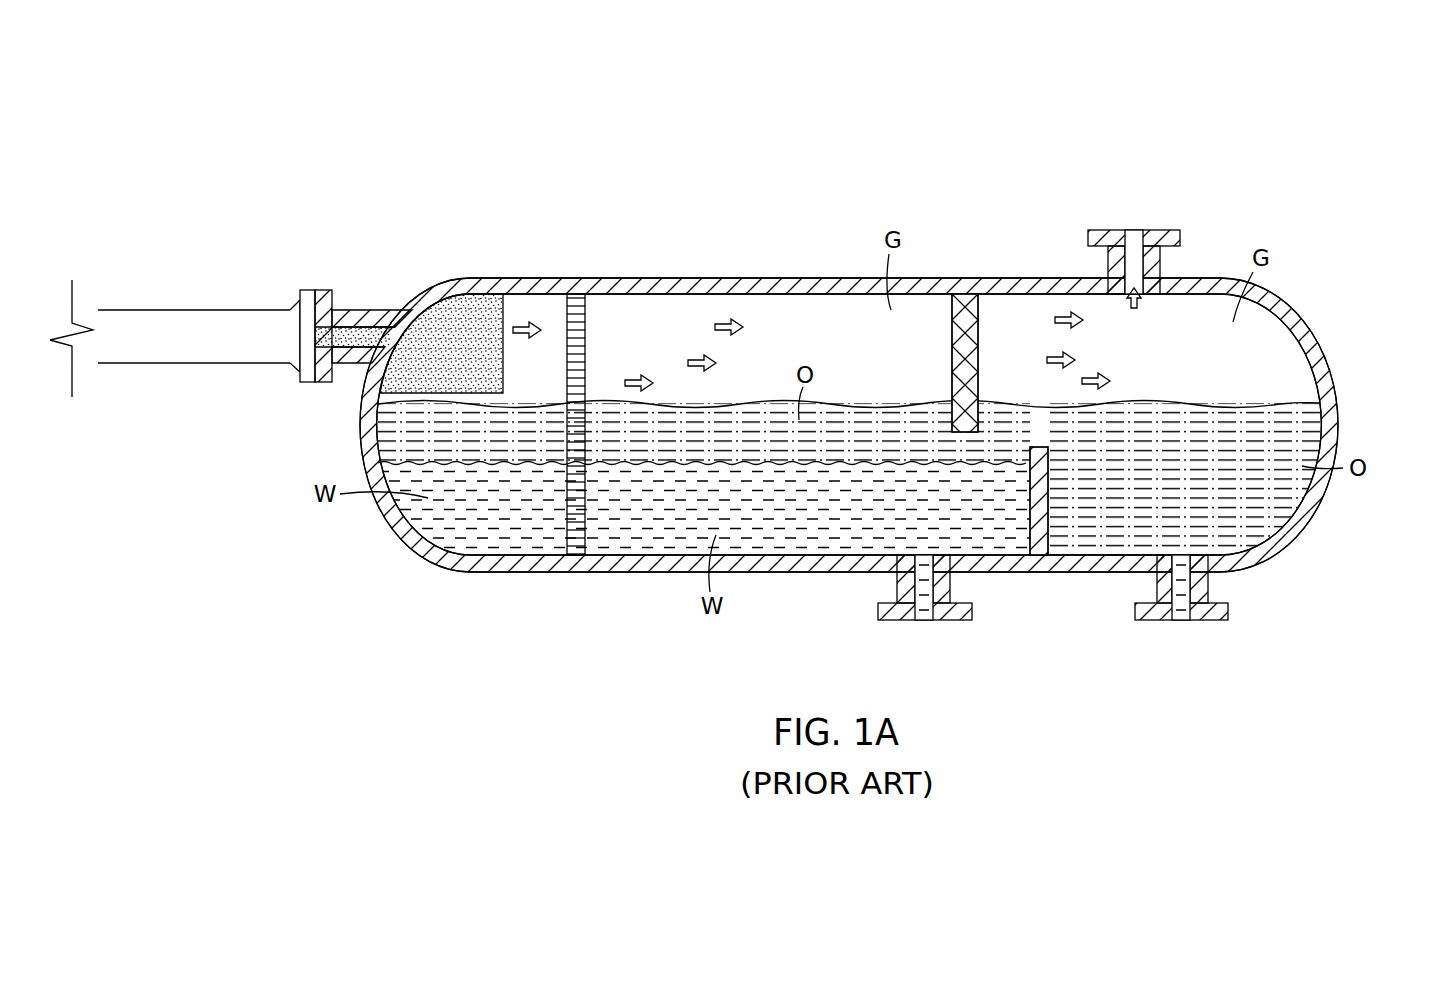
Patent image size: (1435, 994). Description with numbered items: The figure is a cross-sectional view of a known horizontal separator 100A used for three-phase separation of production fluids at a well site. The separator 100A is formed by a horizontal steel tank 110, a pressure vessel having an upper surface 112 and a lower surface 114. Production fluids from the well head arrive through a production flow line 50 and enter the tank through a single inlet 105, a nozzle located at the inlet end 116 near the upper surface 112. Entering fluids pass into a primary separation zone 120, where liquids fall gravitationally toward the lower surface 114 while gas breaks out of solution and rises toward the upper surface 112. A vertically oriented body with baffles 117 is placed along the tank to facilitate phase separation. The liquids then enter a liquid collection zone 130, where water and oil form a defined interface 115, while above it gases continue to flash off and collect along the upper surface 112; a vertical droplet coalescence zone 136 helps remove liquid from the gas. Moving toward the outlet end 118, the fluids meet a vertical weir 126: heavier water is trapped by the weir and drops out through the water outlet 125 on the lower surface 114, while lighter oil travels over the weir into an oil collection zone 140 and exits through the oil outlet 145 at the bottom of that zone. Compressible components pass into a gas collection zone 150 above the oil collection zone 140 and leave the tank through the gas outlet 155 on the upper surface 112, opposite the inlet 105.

The horizontal separator 100A is at (1315, 187).
The production flow line 50 is at (191, 308).
The inlet 105 is at (305, 290).
The steel tank 110 is at (413, 522).
The upper surface 112 is at (537, 278).
The lower surface 114 is at (1276, 546).
The interface 115 is at (803, 465).
The inlet end 116 is at (361, 426).
The baffles 117 is at (562, 545).
The outlet end 118 is at (1338, 420).
The primary separation zone 120 is at (517, 385).
The water outlet 125 is at (972, 615).
The weir 126 is at (1030, 530).
The liquid collection zone 130 is at (726, 385).
The vertical droplet coalescence zone 136 is at (967, 300).
The oil collection zone 140 is at (1284, 513).
The oil outlet 145 is at (1228, 615).
The gas collection zone 150 is at (1277, 345).
The gas outlet 155 is at (1132, 230).